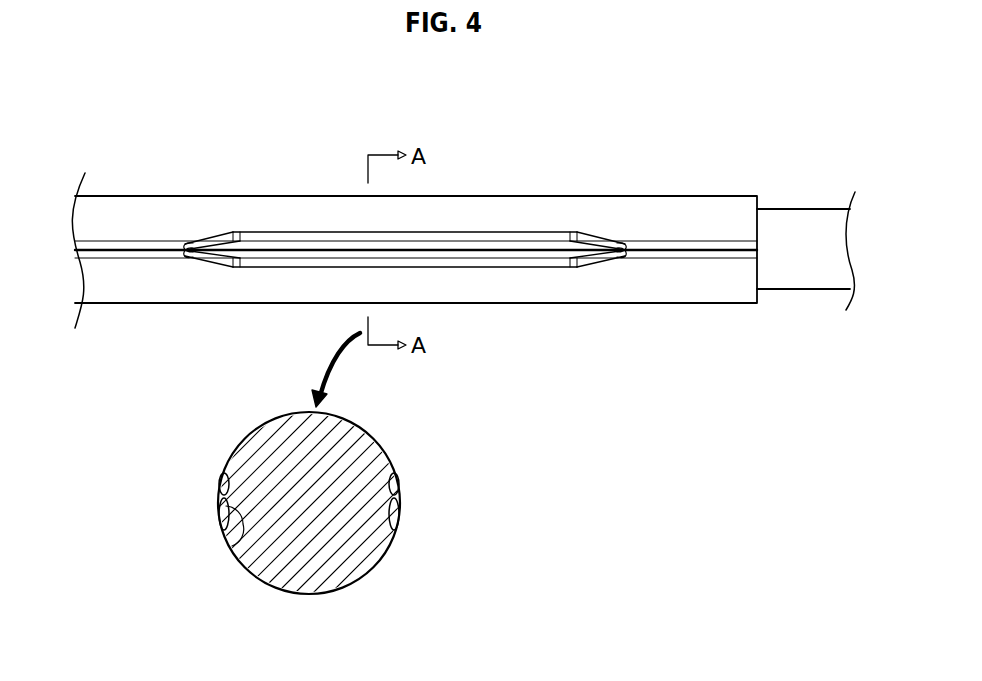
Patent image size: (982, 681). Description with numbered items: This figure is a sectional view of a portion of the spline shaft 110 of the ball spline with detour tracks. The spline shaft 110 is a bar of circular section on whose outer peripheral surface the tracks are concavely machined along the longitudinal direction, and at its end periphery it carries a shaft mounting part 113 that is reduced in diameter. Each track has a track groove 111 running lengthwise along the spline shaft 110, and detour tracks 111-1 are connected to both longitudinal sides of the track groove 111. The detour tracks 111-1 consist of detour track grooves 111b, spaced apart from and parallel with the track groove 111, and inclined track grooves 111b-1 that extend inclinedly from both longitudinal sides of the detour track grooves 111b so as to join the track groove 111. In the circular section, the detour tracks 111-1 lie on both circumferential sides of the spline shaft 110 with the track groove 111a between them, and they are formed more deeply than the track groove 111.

The spline shaft 110 is at (326, 575).
The track groove 111 is at (127, 240).
The detour track 111-1 is at (304, 180).
The track groove 111a is at (291, 251).
The detour track groove 111b is at (485, 232).
The inclined track groove 111b-1 is at (216, 229).
The shaft mounting part 113 is at (803, 273).